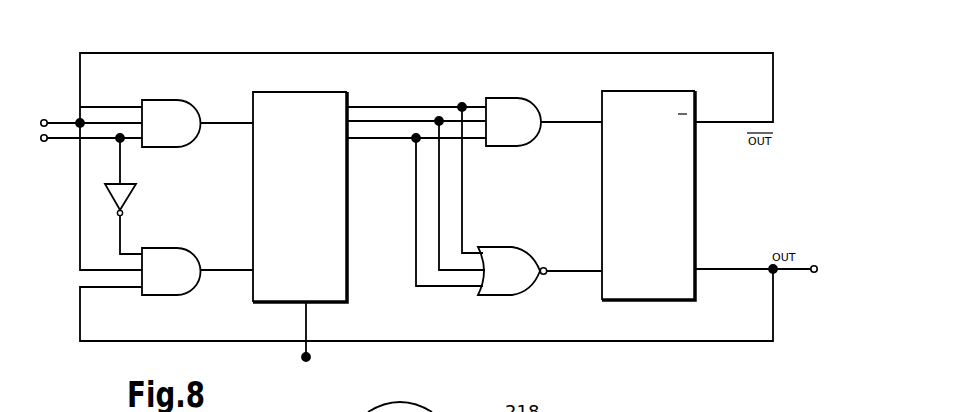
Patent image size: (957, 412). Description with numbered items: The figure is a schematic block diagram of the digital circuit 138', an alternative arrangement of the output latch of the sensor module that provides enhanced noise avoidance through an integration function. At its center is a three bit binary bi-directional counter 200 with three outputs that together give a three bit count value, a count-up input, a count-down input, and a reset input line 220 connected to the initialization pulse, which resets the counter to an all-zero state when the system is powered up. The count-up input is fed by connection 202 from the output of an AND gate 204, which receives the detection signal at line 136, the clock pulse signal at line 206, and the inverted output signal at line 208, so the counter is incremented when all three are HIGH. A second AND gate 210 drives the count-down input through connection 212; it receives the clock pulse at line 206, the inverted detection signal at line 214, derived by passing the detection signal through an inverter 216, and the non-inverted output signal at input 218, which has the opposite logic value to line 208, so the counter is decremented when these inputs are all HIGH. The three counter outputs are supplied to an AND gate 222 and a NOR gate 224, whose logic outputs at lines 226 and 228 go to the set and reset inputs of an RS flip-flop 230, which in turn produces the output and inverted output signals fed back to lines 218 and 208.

The line carrying OUT-bar signal 208 is at (122, 52).
The clock pulse signal CL5 line 206 is at (63, 120).
The detection signal DET line 136 is at (63, 143).
The AND gate 204 is at (168, 110).
The connection 202 is at (230, 126).
The three bit binary bi-directional counter 200 is at (291, 102).
The inverter 216 is at (122, 192).
The inverted detection signal DET-bar line 214 is at (112, 228).
The AND gate 210 is at (167, 268).
The connection 212 is at (230, 274).
The input line carrying OUT signal 218 is at (105, 343).
The input line for initialization pulse INIT 220 is at (308, 318).
The AND gate 222 is at (515, 112).
The logic output line (S signal) 226 is at (565, 120).
The NOR gate 224 is at (513, 262).
The logic output line (R signal) 228 is at (575, 272).
The RS flip-flop 230 is at (663, 100).
The digital circuit (alternative output latch) 138' is at (693, 379).